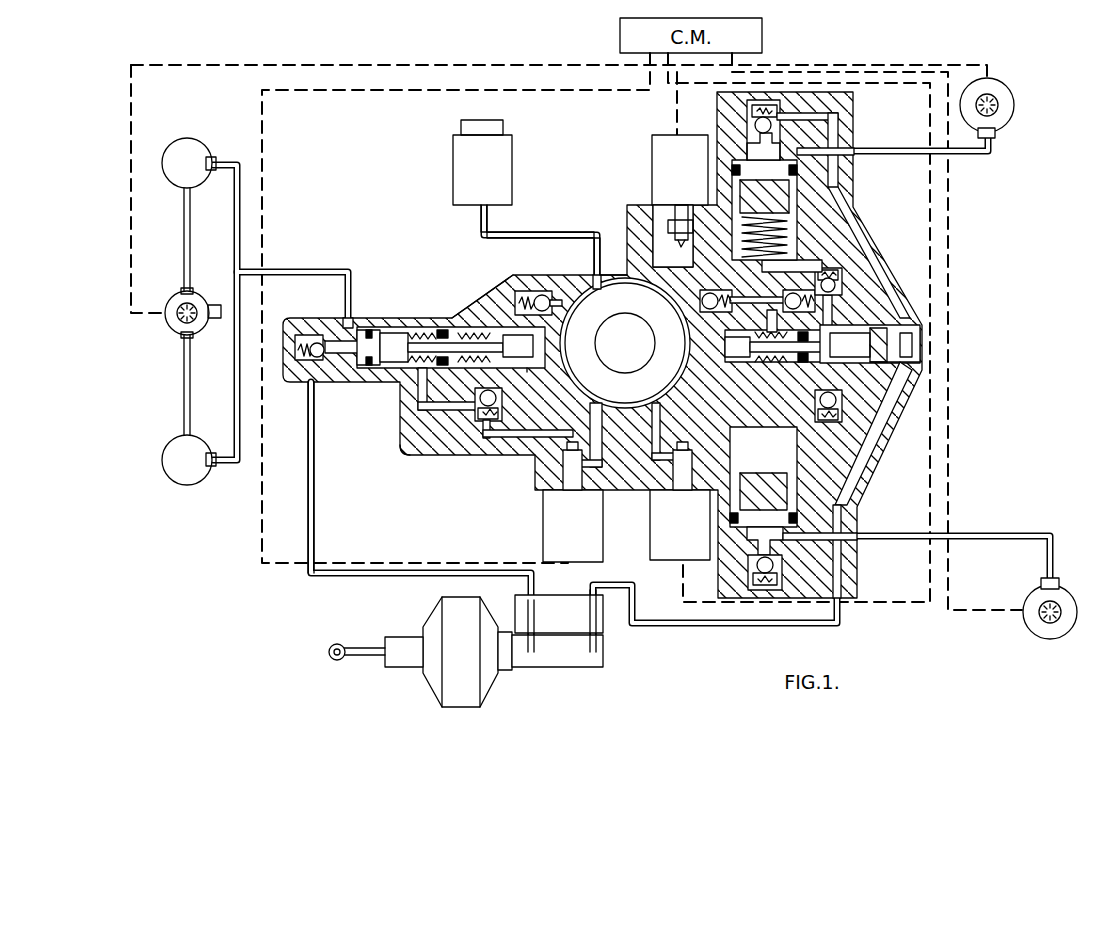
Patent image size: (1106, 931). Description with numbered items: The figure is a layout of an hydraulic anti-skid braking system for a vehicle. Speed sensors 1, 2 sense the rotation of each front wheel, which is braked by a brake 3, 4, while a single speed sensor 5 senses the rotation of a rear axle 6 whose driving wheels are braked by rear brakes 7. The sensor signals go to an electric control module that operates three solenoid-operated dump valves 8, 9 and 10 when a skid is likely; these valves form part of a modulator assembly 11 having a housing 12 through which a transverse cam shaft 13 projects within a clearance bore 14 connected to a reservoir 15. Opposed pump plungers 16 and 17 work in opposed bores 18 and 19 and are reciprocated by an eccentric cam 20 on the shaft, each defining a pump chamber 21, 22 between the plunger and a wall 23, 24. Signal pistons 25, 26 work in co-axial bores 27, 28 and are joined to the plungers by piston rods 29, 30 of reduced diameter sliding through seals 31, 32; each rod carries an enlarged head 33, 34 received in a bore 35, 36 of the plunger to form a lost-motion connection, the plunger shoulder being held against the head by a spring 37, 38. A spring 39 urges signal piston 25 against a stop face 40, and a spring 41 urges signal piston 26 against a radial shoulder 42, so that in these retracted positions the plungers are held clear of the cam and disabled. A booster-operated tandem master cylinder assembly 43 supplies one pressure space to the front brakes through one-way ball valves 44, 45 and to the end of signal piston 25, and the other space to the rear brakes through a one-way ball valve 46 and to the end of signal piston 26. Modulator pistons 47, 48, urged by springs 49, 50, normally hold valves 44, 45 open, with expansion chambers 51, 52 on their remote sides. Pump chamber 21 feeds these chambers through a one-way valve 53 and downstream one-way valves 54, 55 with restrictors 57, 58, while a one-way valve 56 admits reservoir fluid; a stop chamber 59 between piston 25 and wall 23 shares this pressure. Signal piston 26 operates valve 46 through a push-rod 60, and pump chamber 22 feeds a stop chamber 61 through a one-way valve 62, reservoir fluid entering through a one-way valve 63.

The speed sensor 1 is at (998, 103).
The speed sensor 2 is at (1040, 618).
The front wheel brake 3 is at (994, 134).
The front wheel brake 4 is at (1058, 586).
The speed sensor 5 is at (183, 322).
The rear axle 6 is at (187, 255).
The rear brake 7 is at (205, 155).
The solenoid-operated dump valve 8 is at (657, 173).
The solenoid-operated dump valve 9 is at (672, 552).
The solenoid-operated dump valve 10 is at (550, 533).
The modulator assembly 11 is at (903, 281).
The housing 12 is at (511, 275).
The cam shaft 13 is at (638, 362).
The clearance bore 14 is at (632, 265).
The reservoir 15 is at (463, 183).
The pump plunger 16 is at (676, 372).
The pump plunger 17 is at (527, 293).
The bore 18 is at (690, 385).
The bore 19 is at (527, 372).
The eccentric cam 20 is at (600, 385).
The pump chamber 21 is at (767, 322).
The pump chamber 22 is at (458, 320).
The wall 23 is at (820, 400).
The wall 24 is at (402, 449).
The signal piston 25 is at (892, 348).
The signal piston 26 is at (372, 330).
The bore 27 is at (910, 393).
The bore 28 is at (395, 383).
The piston rod 29 is at (762, 418).
The piston rod 30 is at (467, 405).
The seal 31 is at (755, 402).
The seal 32 is at (417, 402).
The enlarged head 33 is at (726, 294).
The enlarged head 34 is at (511, 280).
The bore 35 is at (710, 372).
The bore 36 is at (525, 350).
The spring 37 is at (760, 388).
The spring 38 is at (477, 318).
The spring 39 is at (833, 325).
The stop face 40 is at (922, 335).
The spring 41 is at (415, 327).
The radial shoulder 42 is at (350, 383).
The booster-operated tandem master cylinder assembly 43 is at (556, 655).
The one-way ball valve 44 is at (745, 148).
The one-way ball valve 45 is at (755, 573).
The one-way ball valve 46 is at (300, 336).
The modulator piston 47 is at (772, 121).
The modulator piston 48 is at (840, 505).
The spring 49 is at (792, 184).
The spring 50 is at (790, 470).
The expansion chamber 51 is at (800, 218).
The expansion chamber 52 is at (731, 463).
The one-way valve 53 is at (765, 274).
The one-way valve 54 is at (880, 268).
The one-way valve 55 is at (885, 432).
The one-way valve 56 is at (702, 296).
The restrictor 57 is at (805, 247).
The restrictor 58 is at (772, 437).
The stop chamber 59 is at (888, 395).
The push-rod 60 is at (342, 330).
The stop chamber 61 is at (405, 390).
The one-way valve 62 is at (484, 424).
The one-way valve 63 is at (564, 275).